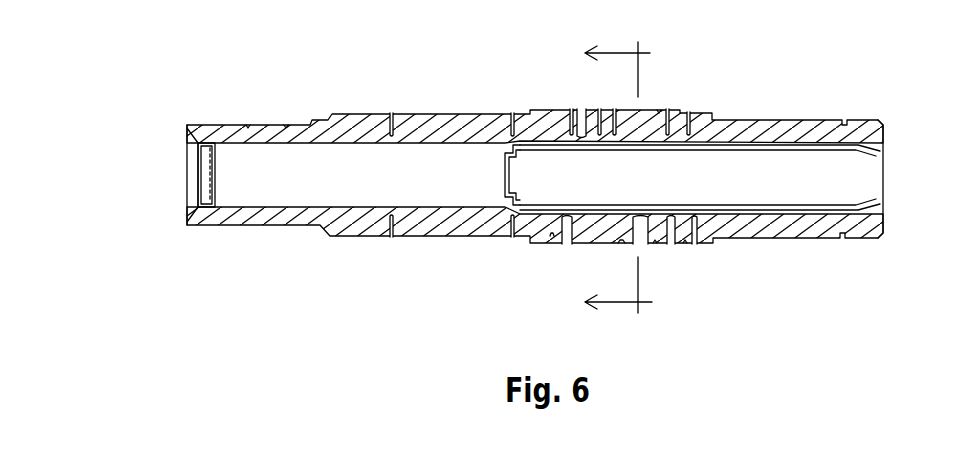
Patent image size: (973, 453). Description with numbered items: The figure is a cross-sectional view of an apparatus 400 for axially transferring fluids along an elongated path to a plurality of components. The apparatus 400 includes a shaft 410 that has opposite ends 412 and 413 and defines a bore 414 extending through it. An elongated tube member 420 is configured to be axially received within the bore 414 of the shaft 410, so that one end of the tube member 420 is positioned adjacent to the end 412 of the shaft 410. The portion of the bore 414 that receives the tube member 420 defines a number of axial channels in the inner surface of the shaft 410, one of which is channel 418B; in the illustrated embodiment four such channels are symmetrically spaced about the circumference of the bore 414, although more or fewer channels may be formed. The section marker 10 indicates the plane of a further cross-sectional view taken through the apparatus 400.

The apparatus 400 is at (341, 313).
The shaft 410 is at (870, 120).
The end of shaft 412 is at (883, 222).
The end of shaft 413 is at (185, 213).
The bore 414 is at (298, 172).
The channel 418B is at (742, 146).
The elongated tube member 420 is at (833, 207).
The section line 10- 10 is at (601, 179).